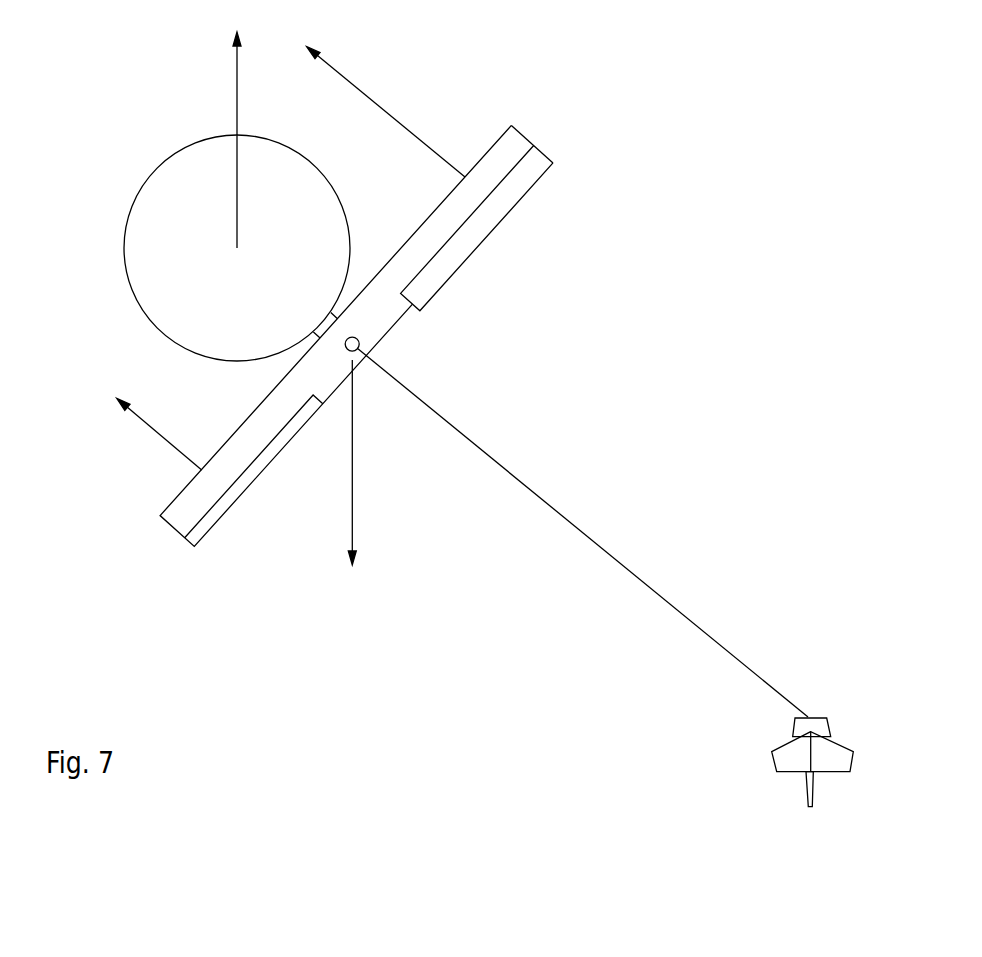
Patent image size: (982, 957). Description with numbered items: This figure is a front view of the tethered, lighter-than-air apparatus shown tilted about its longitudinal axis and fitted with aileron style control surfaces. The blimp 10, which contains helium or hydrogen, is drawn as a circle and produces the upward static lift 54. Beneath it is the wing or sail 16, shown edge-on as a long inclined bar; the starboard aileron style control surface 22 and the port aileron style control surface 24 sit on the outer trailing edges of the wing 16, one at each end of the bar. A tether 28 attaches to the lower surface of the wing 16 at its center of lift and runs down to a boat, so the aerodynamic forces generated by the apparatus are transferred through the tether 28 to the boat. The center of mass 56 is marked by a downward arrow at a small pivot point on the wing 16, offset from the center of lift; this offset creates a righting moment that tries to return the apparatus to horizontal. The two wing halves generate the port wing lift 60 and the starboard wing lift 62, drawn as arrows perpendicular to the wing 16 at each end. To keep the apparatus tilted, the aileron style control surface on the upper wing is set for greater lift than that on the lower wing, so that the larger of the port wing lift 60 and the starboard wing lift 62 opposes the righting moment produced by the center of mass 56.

The blimp 10 is at (162, 217).
The wing or sail 16 is at (377, 318).
The starboard aileron style control surface 22 is at (235, 492).
The port aileron style control surface 24 is at (512, 193).
The tether 28 is at (652, 585).
The static lift 54 is at (235, 107).
The center of mass 56 is at (352, 453).
The port wing lift 60 is at (362, 92).
The starboard wing lift 62 is at (160, 440).